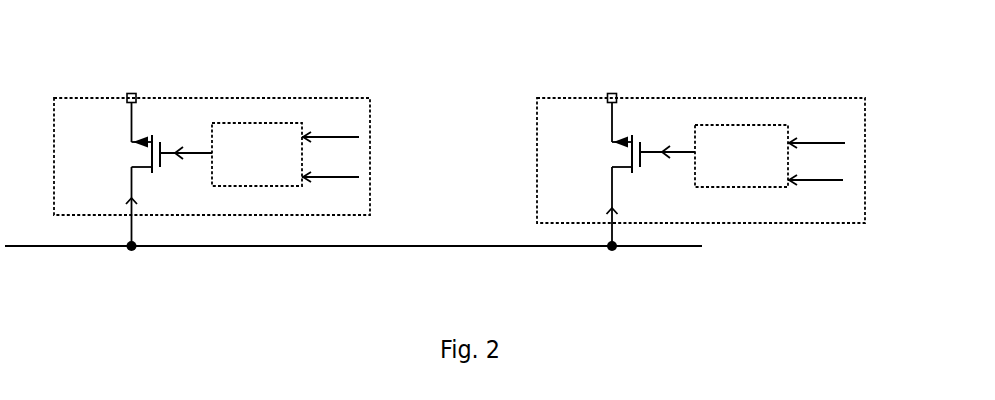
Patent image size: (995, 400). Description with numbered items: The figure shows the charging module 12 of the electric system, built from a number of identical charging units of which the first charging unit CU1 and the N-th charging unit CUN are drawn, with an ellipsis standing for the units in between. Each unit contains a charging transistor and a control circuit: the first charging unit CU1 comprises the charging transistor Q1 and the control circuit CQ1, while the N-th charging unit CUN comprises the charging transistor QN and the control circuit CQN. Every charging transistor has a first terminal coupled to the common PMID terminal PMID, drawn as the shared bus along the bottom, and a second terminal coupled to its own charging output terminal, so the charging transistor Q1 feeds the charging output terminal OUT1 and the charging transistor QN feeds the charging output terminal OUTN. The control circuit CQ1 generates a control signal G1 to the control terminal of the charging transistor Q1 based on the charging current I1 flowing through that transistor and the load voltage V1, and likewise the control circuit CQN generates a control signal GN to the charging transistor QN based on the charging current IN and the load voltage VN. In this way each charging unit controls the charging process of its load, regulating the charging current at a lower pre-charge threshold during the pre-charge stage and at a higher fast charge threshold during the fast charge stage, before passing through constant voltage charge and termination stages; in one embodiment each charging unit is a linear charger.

The charging module 12 is at (863, 33).
The PMID terminal PMID is at (353, 257).
The first charging unit CU1 is at (376, 132).
The N-th charging unit CUN is at (872, 121).
The first charging output terminal OUT1 is at (131, 88).
The N-th charging output terminal OUTN is at (611, 88).
The first charging transistor Q1 is at (160, 175).
The N-th charging transistor QN is at (642, 175).
The first control signal G1 is at (186, 143).
The N-th control signal GN is at (667, 143).
The first charging current I1 is at (119, 203).
The N-th charging current IN is at (600, 211).
The first control circuit CQ1 is at (238, 194).
The N-th control circuit CQN is at (725, 196).
The first load voltage V1 is at (330, 130).
The N-th load voltage VN is at (816, 136).